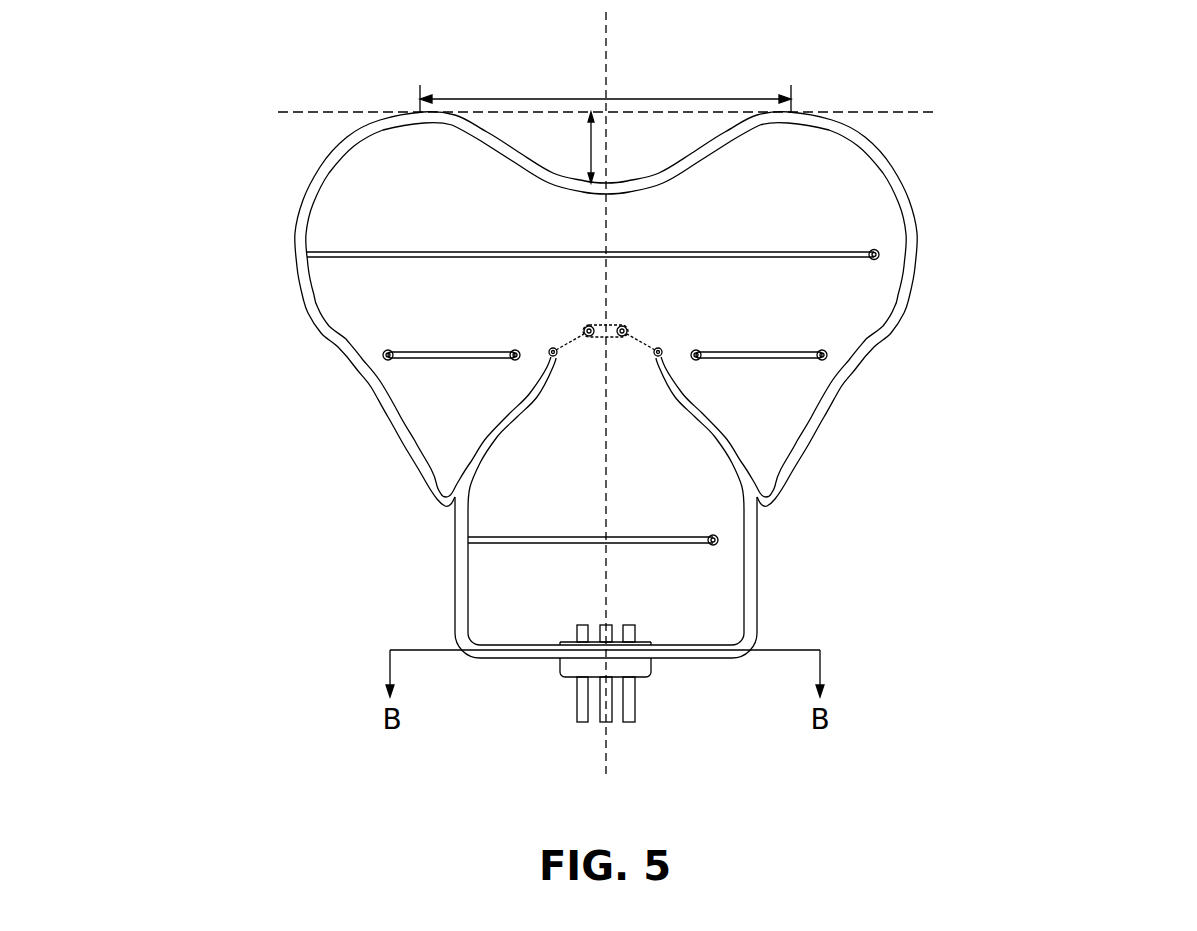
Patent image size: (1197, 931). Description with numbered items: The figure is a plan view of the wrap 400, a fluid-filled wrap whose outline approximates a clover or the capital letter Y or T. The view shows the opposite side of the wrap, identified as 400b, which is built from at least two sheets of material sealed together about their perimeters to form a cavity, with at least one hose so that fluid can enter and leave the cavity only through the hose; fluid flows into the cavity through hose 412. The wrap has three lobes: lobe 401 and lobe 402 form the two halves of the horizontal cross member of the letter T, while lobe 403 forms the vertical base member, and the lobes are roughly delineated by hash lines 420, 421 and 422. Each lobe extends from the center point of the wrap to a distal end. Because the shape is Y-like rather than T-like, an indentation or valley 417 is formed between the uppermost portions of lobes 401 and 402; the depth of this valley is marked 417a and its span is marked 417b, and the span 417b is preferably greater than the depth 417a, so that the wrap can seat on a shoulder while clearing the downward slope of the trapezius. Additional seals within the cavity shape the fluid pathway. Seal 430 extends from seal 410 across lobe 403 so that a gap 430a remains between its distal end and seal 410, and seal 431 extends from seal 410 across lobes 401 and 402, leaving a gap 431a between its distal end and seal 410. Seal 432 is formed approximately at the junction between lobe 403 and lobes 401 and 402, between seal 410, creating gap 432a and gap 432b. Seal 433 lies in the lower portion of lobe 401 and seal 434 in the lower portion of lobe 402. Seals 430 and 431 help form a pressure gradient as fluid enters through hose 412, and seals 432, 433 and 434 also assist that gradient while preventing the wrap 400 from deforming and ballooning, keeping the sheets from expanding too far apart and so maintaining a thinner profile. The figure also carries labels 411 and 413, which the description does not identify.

The wrap 400 is at (1055, 160).
The opposite side of wrap 400b is at (960, 293).
The lobe 401 is at (924, 193).
The lobe 402 is at (283, 219).
The lobe 403 is at (770, 606).
The seal 410 is at (883, 162).
The first pin 411 is at (637, 714).
The hose 412 is at (610, 718).
The third pin 413 is at (578, 714).
The valley 417 is at (613, 74).
The depth of the valley 417a is at (589, 158).
The span of the valley 417b is at (497, 99).
The hash line 420 is at (607, 63).
The hash line 421 is at (644, 330).
The hash line 422 is at (568, 330).
The seal 430 is at (523, 538).
The gap 430a is at (728, 548).
The seal 431 is at (772, 250).
The gap 431a is at (890, 255).
The seal 432 is at (625, 322).
The gap 432a is at (572, 348).
The gap 432b is at (640, 348).
The seal 433 is at (758, 358).
The seal 434 is at (448, 358).